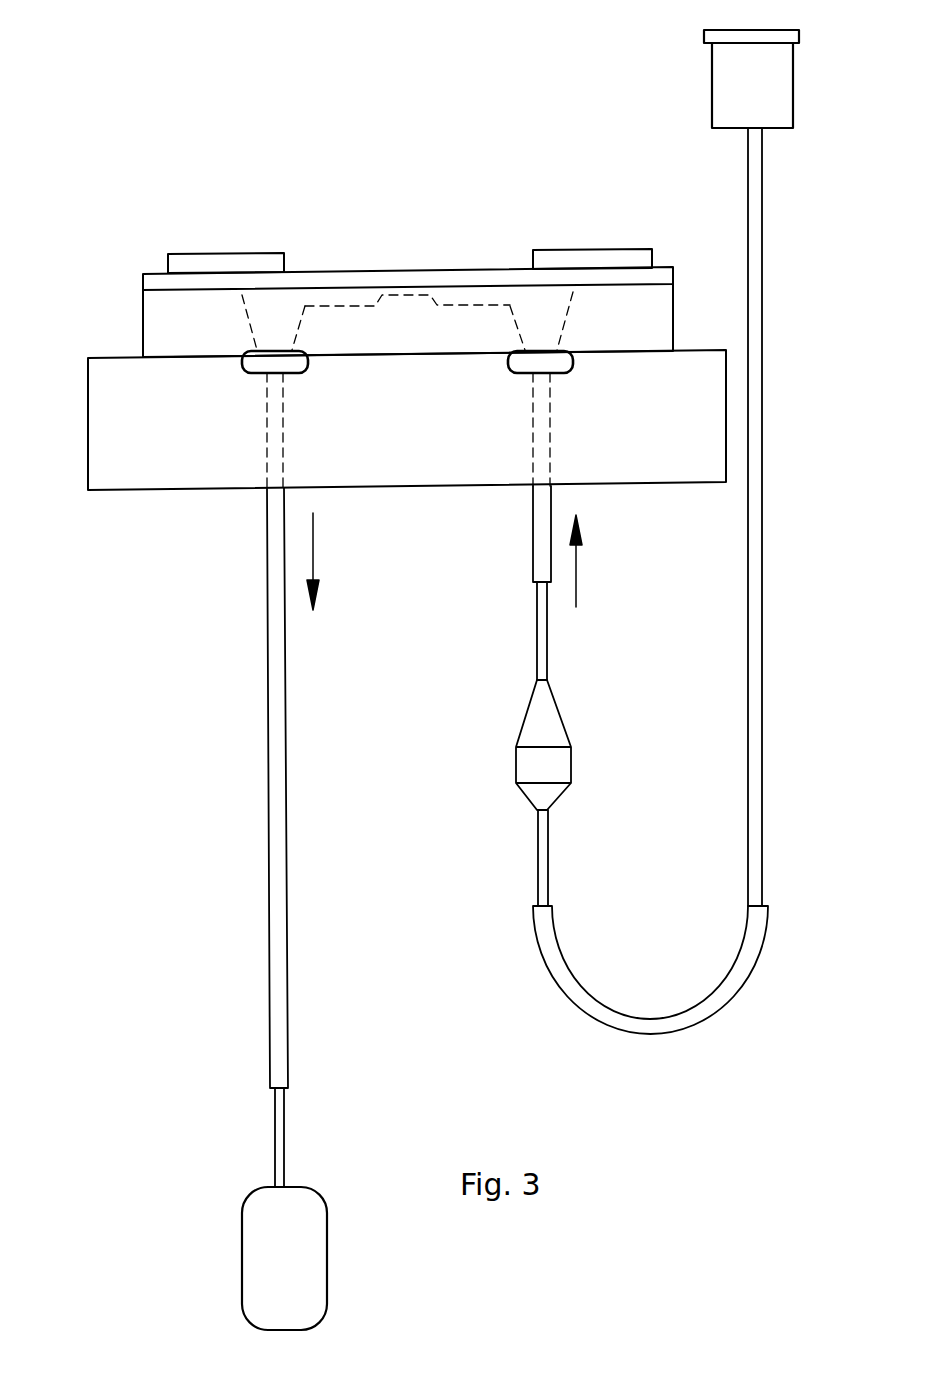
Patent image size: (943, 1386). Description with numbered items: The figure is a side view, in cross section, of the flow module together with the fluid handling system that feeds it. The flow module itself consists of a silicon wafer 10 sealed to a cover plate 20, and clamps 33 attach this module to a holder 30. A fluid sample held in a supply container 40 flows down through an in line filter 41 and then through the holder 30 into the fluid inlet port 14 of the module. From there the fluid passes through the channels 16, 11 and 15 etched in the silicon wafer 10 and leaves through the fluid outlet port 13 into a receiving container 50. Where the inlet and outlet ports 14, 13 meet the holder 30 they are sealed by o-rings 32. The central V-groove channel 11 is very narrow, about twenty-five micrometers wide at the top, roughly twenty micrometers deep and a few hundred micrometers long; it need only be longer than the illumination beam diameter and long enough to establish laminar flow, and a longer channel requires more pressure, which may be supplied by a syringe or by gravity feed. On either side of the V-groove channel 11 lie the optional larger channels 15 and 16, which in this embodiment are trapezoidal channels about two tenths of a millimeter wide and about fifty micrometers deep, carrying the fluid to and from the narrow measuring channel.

The silicon wafer 10 is at (143, 327).
The V-groove channel 11 is at (425, 297).
The fluid outlet port 13 is at (245, 313).
The fluid inlet port 14 is at (567, 312).
The larger channel 15 is at (352, 308).
The larger channel 16 is at (490, 307).
The cover plate 20 is at (143, 285).
The holder 30 is at (88, 463).
The o-rings 32 is at (308, 373).
The clamps 33 is at (230, 253).
The supply container 40 is at (793, 92).
The in line filter 41 is at (571, 762).
The receiving container 50 is at (242, 1250).